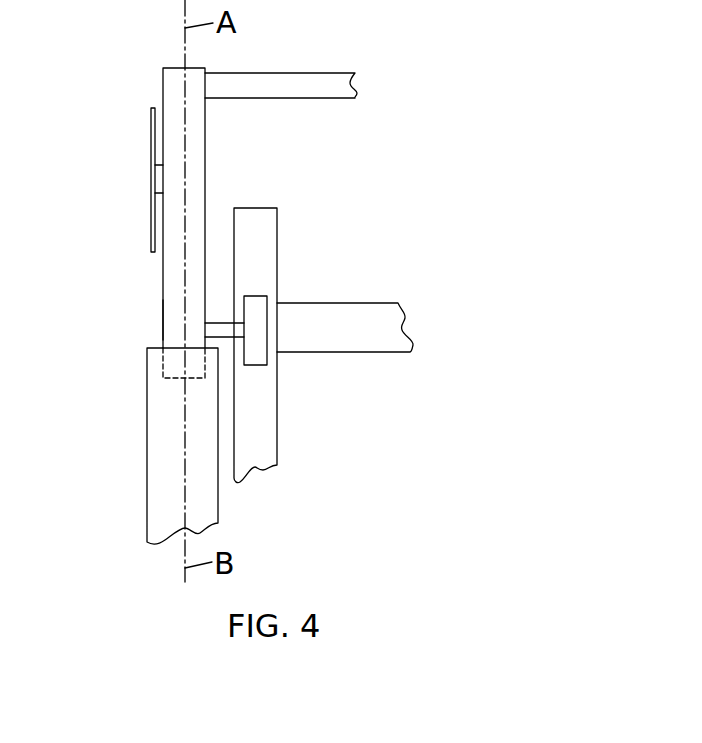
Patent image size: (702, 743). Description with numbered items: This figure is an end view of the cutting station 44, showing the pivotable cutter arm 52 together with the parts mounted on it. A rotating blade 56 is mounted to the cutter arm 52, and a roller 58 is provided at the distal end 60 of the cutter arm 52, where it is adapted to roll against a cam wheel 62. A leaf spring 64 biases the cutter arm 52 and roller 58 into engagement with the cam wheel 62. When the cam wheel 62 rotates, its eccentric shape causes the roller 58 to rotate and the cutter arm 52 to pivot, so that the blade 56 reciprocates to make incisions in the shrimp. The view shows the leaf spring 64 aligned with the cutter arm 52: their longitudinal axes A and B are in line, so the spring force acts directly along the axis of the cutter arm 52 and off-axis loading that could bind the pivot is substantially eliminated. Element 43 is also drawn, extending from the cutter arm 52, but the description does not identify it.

The horizontal arm 43 is at (293, 80).
The cutting station 44 is at (104, 93).
The cutter arm 52 is at (197, 163).
The rotating blade 56 is at (150, 232).
The roller 58 is at (260, 303).
The distal end 60 is at (175, 315).
The cam wheel 62 is at (268, 230).
The leaf spring 64 is at (153, 447).